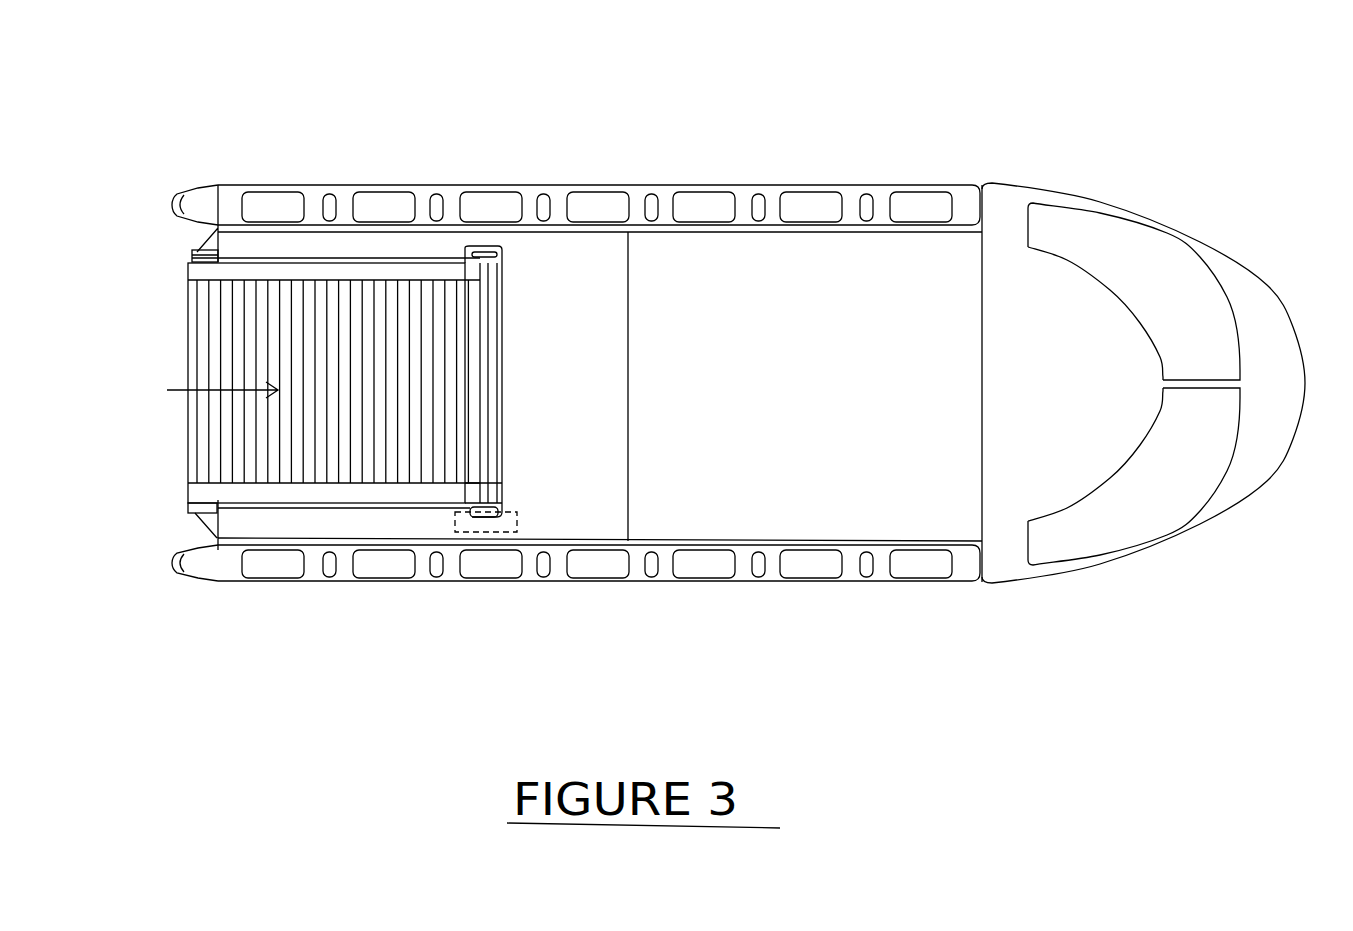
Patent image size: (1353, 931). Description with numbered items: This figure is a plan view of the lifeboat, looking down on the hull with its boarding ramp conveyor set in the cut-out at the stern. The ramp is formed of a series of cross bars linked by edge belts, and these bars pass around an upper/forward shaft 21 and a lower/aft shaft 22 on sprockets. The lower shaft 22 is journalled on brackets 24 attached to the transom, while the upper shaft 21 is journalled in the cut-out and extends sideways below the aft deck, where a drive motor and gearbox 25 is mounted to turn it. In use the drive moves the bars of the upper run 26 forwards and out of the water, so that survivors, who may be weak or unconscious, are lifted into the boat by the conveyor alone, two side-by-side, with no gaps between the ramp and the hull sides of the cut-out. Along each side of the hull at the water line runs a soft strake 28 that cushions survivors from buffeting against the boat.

The upper/forward shaft 21 is at (483, 280).
The lower/aft shaft 22 is at (197, 255).
The brackets 24 is at (212, 527).
The drive motor and gearbox 25 is at (465, 523).
The upper run 26 is at (212, 392).
The soft strake 28 is at (853, 187).